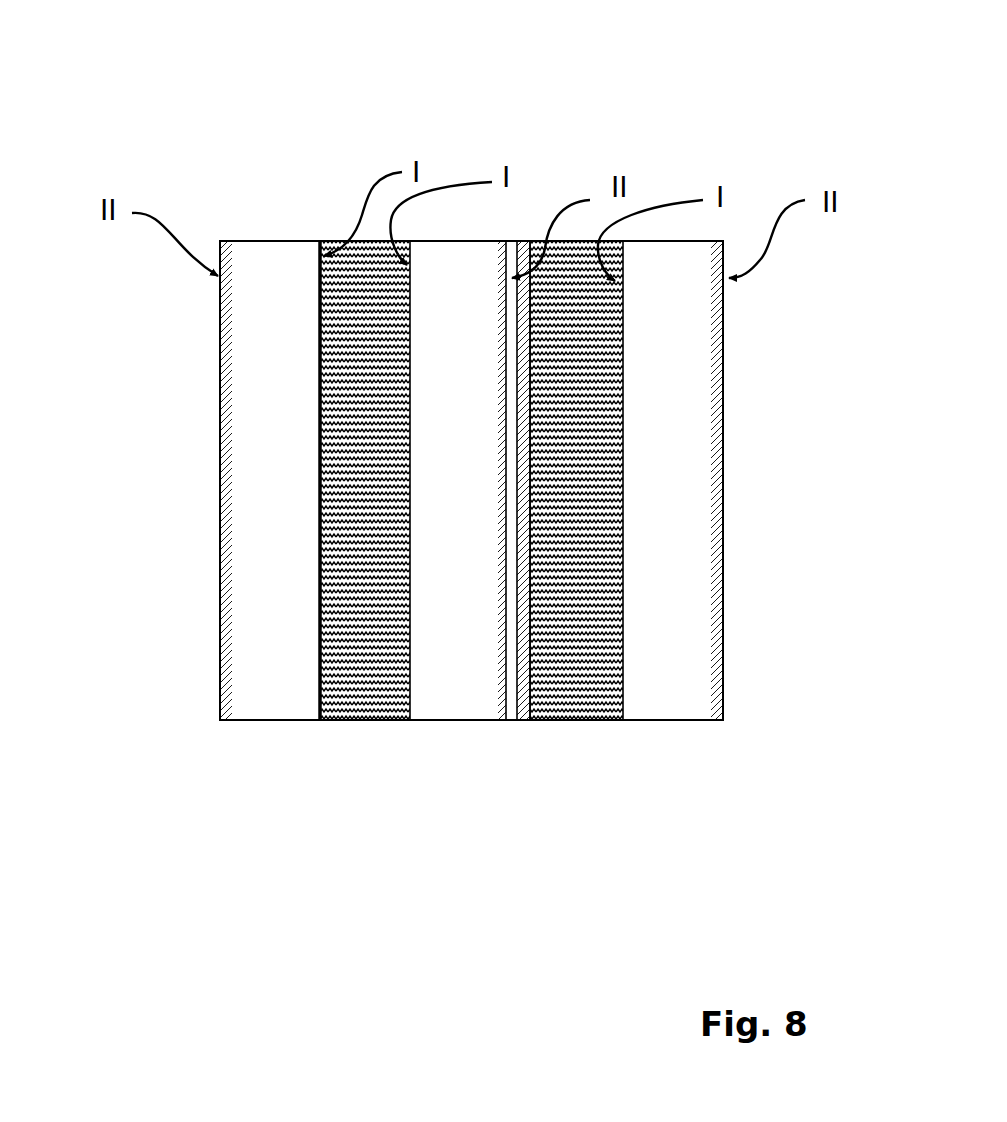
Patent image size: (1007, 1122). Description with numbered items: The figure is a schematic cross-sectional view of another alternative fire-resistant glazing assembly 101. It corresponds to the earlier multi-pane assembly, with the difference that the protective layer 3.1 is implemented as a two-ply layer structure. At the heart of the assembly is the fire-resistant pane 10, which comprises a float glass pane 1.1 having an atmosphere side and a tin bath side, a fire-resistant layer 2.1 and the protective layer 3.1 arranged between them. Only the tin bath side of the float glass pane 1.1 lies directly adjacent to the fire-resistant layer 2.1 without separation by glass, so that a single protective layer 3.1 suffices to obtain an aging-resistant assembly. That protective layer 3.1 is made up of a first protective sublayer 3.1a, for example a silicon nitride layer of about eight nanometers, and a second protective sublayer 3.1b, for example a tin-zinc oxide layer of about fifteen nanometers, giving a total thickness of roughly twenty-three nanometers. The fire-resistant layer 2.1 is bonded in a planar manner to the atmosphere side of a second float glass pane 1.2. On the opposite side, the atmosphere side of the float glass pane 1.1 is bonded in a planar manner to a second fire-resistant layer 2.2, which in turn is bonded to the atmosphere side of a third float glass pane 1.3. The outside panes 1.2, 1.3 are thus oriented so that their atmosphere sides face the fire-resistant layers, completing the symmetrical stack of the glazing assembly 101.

The fire-resistant glazing assembly 101 is at (183, 170).
The float glass pane 1.1 is at (445, 703).
The second float glass pane 1.2 is at (657, 703).
The third float glass pane 1.3 is at (282, 700).
The fire-resistant layer 2.1 is at (571, 703).
The second fire-resistant layer 2.2 is at (360, 703).
The protective layer 3.1 is at (503, 726).
The first protective sublayer 3.1a is at (512, 255).
The second protective sublayer 3.1b is at (530, 250).
The fire-resistant pane 10 is at (410, 720).